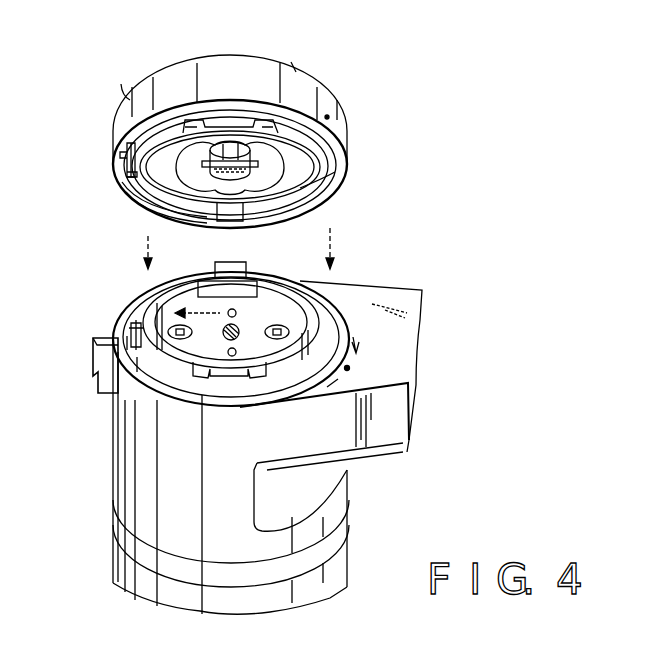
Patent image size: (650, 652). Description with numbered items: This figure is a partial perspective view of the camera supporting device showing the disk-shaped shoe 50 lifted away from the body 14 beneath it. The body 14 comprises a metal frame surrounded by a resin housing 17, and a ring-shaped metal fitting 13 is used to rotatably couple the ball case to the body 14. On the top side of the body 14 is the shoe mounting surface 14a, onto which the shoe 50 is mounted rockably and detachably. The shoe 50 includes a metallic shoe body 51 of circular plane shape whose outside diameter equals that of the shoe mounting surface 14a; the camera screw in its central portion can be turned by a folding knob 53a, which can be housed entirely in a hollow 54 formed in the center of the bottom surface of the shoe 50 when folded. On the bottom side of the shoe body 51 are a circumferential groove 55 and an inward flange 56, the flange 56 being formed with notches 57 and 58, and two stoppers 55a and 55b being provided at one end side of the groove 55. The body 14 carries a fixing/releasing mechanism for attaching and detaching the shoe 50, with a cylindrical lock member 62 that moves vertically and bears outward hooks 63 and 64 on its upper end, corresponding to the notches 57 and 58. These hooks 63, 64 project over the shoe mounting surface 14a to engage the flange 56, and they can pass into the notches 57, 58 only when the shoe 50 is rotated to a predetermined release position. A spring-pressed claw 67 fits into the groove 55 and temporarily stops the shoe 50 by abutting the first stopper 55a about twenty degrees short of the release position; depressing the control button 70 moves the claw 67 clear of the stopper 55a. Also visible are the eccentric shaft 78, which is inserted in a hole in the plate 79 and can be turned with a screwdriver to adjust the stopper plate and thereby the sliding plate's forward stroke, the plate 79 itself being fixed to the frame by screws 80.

The ring-shaped metal fitting 13 is at (337, 533).
The body 14 is at (350, 548).
The shoe mounting surface 14a is at (175, 383).
The resin housing 17 is at (113, 478).
The shoe 50 is at (172, 57).
The shoe body 51 is at (116, 80).
The folding knob 53a is at (276, 175).
The hollow 54 is at (133, 199).
The circumferential groove 55 is at (326, 190).
The first stopper 55a is at (127, 156).
The second stopper 55b is at (130, 176).
The inward flange 56 is at (287, 148).
The notch 57 is at (238, 221).
The notch 58 is at (258, 118).
The lock member 62 is at (168, 358).
The hook 63 is at (228, 262).
The hook 64 is at (257, 382).
The claw 67 is at (133, 332).
The control button 70 is at (93, 366).
The eccentric shaft 78 is at (226, 327).
The plate 79 is at (277, 313).
The screw 80 is at (292, 323).